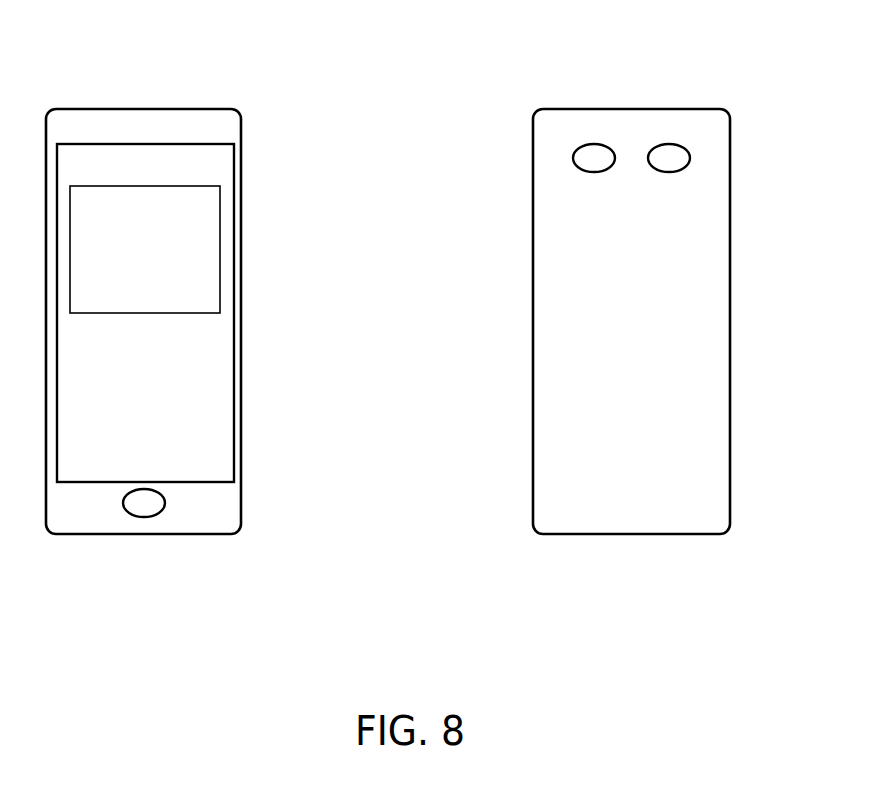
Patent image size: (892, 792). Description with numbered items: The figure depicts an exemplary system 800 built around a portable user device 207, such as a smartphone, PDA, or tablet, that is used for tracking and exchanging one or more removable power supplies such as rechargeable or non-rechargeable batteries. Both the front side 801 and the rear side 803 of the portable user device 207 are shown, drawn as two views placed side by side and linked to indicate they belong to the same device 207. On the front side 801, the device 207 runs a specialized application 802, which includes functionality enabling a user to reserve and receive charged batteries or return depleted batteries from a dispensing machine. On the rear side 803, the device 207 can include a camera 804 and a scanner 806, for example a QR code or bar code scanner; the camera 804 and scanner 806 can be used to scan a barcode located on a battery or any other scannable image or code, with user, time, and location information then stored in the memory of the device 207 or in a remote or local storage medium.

The system 800 is at (196, 38).
The front side 801 is at (243, 543).
The specialized application 802 is at (121, 262).
The portable user device 207 is at (256, 343).
The rear side 803 is at (732, 543).
The camera 804 is at (565, 157).
The scanner 806 is at (697, 157).